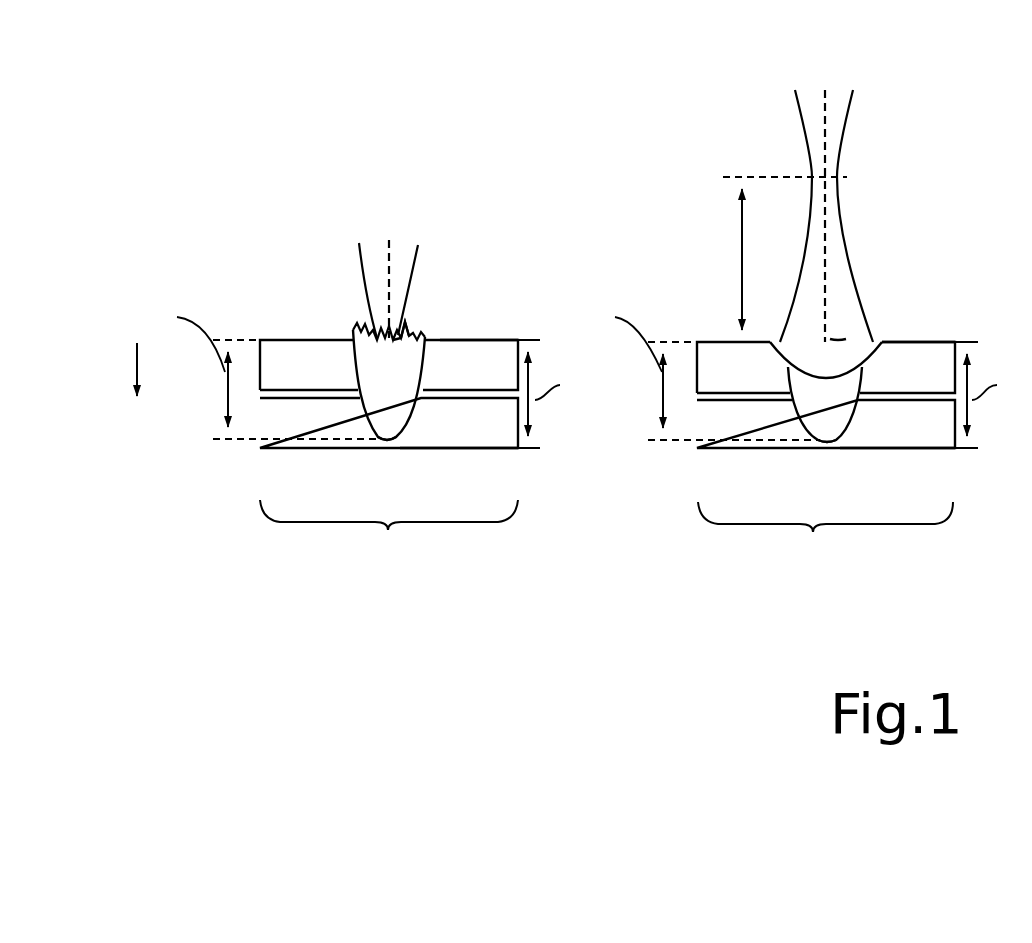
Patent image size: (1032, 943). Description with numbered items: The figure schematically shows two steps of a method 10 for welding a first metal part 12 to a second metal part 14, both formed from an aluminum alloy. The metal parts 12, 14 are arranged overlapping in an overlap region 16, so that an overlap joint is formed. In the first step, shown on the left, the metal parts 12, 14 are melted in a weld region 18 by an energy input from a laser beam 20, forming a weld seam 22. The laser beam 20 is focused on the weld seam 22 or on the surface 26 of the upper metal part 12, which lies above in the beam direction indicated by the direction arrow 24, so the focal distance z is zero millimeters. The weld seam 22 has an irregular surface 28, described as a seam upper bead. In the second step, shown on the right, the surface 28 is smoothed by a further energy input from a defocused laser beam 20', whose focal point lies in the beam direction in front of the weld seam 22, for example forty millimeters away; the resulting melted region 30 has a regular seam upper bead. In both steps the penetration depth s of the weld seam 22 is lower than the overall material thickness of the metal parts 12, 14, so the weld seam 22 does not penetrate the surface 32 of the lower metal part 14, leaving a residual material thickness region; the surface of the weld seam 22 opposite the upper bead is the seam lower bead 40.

The method 10 is at (597, 613).
The first metal part 12 is at (500, 350).
The second metal part 14 is at (498, 440).
The overlap region 16 is at (606, 533).
The weld region 18 is at (345, 322).
The laser beam 20 is at (350, 265).
The defocused laser beam 20' is at (799, 207).
The weld seam 22 is at (372, 407).
The direction arrow 24 is at (132, 377).
The surface 26 is at (462, 340).
The irregular surface 28 is at (400, 323).
The melted region 30 is at (850, 358).
The surface 32 is at (437, 452).
The seam lower bead 40 is at (388, 447).